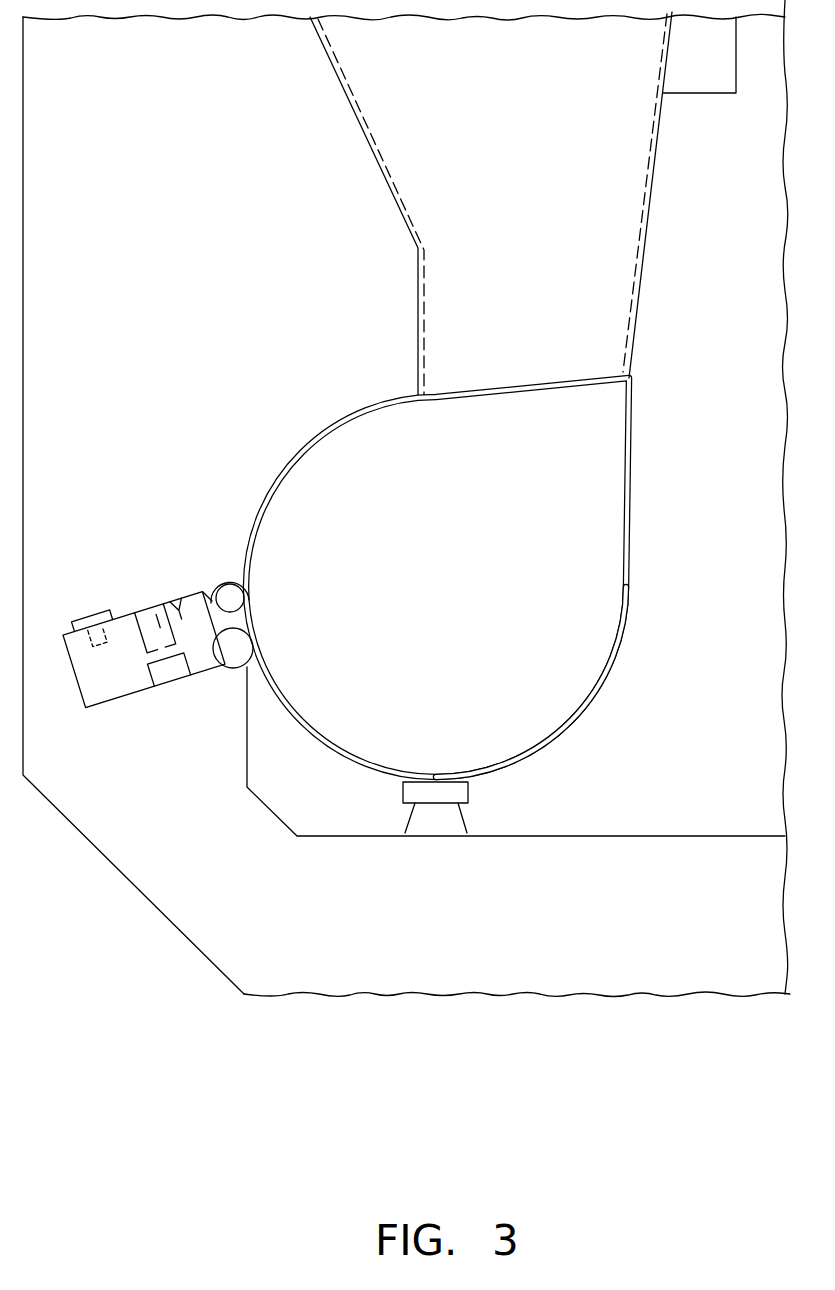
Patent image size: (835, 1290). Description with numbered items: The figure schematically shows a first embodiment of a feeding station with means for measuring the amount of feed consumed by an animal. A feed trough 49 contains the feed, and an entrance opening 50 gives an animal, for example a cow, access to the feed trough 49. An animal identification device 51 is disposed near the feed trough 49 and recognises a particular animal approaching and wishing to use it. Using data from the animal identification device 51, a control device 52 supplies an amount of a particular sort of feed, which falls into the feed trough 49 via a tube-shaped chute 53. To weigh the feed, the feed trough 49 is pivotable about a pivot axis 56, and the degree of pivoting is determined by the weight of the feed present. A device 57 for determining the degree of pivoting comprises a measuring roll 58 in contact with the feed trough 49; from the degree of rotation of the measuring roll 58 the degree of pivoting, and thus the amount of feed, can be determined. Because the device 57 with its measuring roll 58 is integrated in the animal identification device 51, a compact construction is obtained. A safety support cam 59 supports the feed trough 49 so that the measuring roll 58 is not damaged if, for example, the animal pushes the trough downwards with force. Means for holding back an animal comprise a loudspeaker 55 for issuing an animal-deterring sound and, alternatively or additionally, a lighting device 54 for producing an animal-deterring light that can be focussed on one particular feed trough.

The feed trough 49 is at (602, 680).
The entrance opening 50 is at (322, 437).
The animal identification device 51 is at (97, 685).
The control device 52 is at (703, 60).
The tube-shaped chute 53 is at (647, 258).
The lighting device 54 is at (152, 620).
The loudspeaker 55 is at (182, 603).
The pivot axis 56 is at (228, 593).
The device for determining the degree of pivoting 57 is at (170, 670).
The measuring roll 58 is at (250, 662).
The safety support cam 59 is at (447, 819).